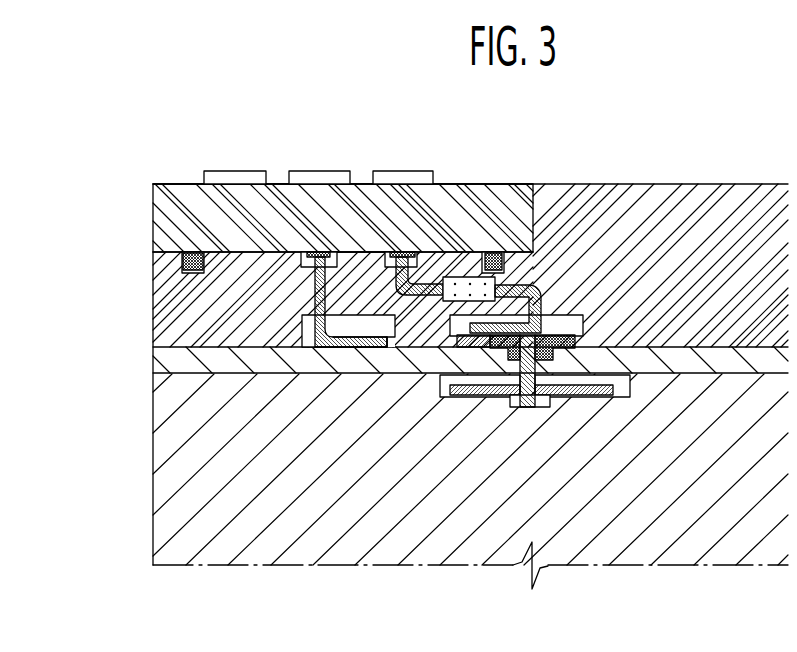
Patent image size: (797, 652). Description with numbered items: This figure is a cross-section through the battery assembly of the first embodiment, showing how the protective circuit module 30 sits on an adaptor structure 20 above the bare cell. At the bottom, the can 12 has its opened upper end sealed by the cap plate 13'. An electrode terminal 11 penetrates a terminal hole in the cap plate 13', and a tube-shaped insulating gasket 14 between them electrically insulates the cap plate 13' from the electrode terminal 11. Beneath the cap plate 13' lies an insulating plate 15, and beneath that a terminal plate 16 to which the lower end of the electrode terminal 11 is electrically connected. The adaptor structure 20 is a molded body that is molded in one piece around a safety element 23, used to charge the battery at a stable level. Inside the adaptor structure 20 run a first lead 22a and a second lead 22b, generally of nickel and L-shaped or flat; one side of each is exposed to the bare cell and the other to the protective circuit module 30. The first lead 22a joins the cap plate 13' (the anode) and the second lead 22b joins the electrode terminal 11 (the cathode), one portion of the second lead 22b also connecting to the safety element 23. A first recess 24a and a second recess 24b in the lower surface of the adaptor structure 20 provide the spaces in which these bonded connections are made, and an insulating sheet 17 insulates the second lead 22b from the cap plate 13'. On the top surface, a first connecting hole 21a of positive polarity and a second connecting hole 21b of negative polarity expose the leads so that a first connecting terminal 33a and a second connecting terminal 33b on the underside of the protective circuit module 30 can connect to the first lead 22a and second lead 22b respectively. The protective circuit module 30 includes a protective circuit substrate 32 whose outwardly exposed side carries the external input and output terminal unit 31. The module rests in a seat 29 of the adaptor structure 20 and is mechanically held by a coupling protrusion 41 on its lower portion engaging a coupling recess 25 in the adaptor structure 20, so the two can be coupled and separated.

The protective circuit module 30 is at (122, 136).
The external input and output terminal unit 31 is at (206, 172).
The protective circuit substrate 32 is at (158, 207).
The coupling recess 25 is at (154, 252).
The seat 29 is at (353, 252).
The coupling protrusion 41 is at (183, 262).
The adaptor structure 20 is at (158, 298).
The cap plate 13' is at (438, 358).
The can 12 is at (157, 505).
The first connecting hole 21a is at (306, 255).
The first lead 22a is at (353, 336).
The first recess 24a is at (304, 333).
The first connecting terminal 33a is at (322, 253).
The second connecting terminal 33b is at (410, 253).
The second connecting hole 21b is at (418, 253).
The second lead 22b is at (524, 254).
The second recess 24b is at (567, 326).
The safety element 23 is at (474, 278).
The insulating gasket 14 is at (573, 340).
The electrode terminal 11 is at (532, 398).
The insulating plate 15 is at (622, 388).
The terminal plate 16 is at (592, 385).
The insulating sheet 17 is at (478, 350).